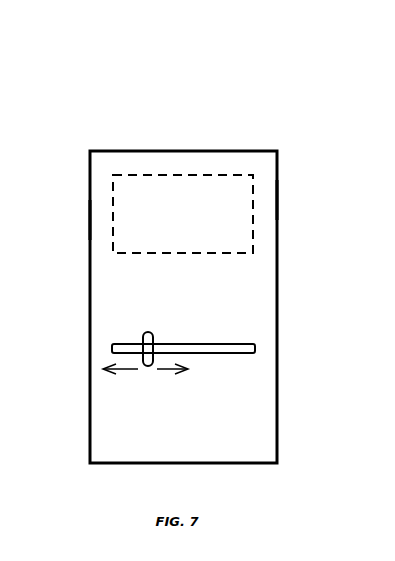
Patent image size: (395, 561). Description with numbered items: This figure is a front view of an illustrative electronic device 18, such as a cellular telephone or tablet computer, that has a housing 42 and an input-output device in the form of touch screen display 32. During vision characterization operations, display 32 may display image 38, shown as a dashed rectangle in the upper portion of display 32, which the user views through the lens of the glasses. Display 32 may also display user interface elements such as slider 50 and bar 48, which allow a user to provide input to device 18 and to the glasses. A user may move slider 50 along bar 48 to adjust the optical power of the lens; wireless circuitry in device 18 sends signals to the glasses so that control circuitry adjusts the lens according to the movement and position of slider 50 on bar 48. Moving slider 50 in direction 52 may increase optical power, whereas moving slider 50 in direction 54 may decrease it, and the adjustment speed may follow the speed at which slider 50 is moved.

The electronic device 18 is at (283, 101).
The touch screen display 32 is at (270, 202).
The image 38 is at (198, 188).
The housing 42 is at (90, 218).
The bar 48 is at (206, 343).
The slider 50 is at (149, 331).
The direction 52 is at (168, 373).
The direction 54 is at (122, 373).